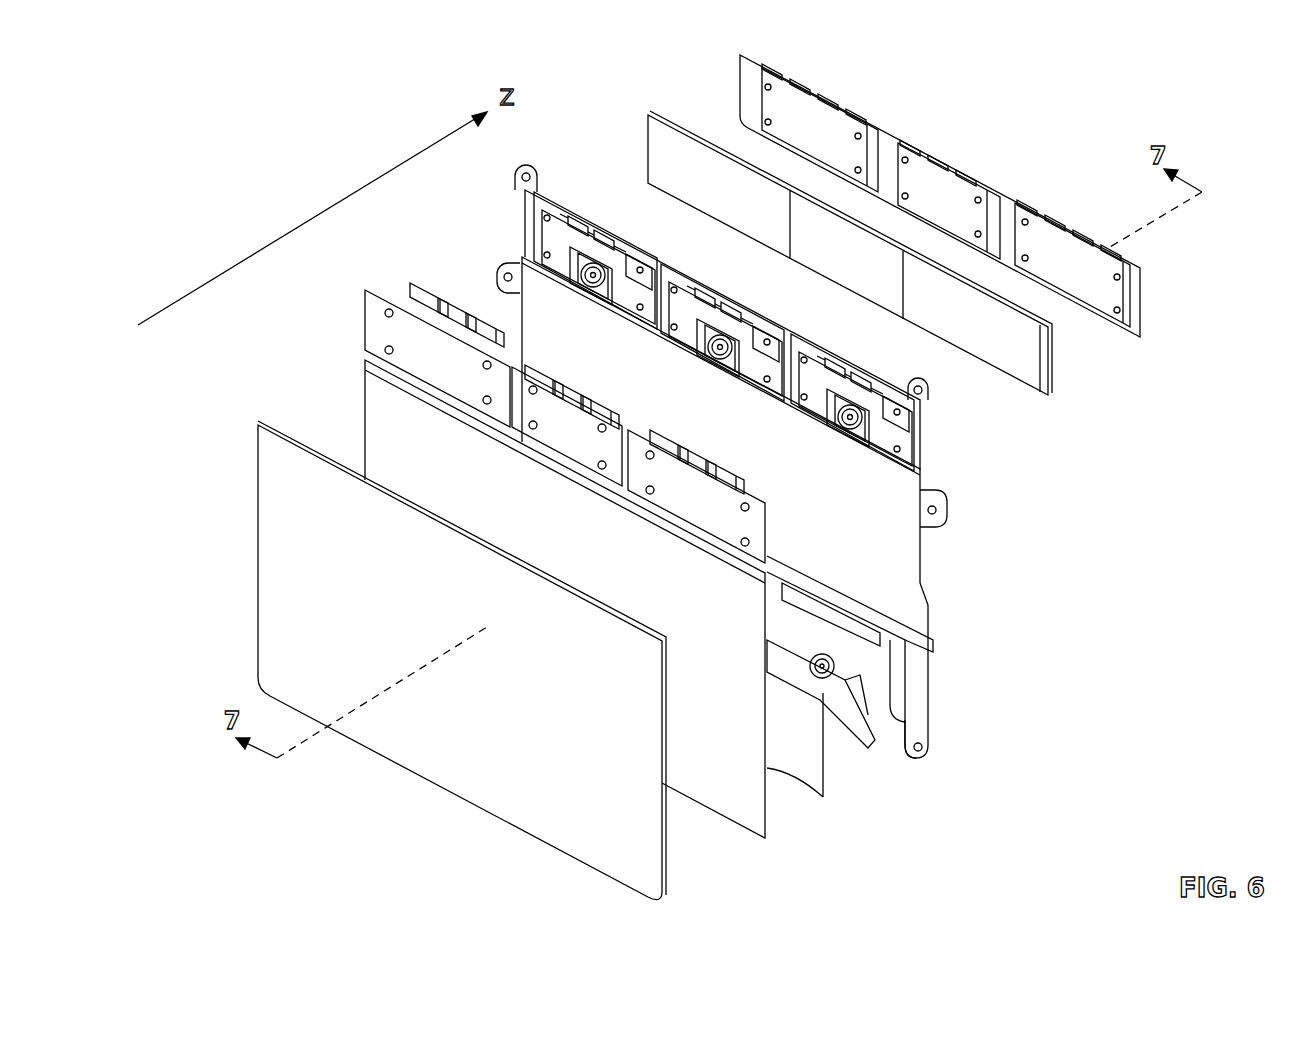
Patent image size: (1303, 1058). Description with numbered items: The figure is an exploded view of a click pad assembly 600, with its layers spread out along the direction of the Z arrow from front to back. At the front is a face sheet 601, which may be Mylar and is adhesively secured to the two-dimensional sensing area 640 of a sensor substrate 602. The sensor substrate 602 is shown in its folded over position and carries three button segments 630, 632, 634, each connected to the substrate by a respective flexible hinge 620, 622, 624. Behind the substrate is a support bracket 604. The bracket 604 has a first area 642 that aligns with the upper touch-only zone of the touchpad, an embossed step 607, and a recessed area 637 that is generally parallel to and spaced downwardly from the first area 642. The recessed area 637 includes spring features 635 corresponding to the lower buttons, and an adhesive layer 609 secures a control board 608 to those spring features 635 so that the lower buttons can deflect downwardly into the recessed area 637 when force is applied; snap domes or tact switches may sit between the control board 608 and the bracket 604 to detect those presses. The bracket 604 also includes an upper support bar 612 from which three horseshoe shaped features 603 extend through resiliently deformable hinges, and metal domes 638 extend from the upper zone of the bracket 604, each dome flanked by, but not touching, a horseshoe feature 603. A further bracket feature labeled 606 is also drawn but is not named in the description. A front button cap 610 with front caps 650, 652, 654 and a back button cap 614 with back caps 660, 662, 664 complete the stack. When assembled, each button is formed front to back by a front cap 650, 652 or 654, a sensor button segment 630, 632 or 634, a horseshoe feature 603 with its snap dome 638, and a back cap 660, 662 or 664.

The click pad assembly 600 is at (1184, 78).
The face sheet 601 is at (270, 598).
The sensor substrate 602 is at (525, 548).
The horseshoe shaped feature 603 is at (890, 432).
The support bracket 604 is at (697, 493).
The mounting ear 606 is at (498, 275).
The embossed step 607 is at (935, 635).
The control board 608 is at (790, 770).
The adhesive layer 609 is at (865, 733).
The front button cap 610 is at (850, 269).
The upper support bar 612 is at (530, 186).
The back button cap 614 is at (980, 196).
The flexible hinge 620 is at (457, 303).
The flexible hinge 622 is at (572, 380).
The flexible hinge 624 is at (697, 445).
The button segment 630 is at (417, 368).
The button segment 632 is at (544, 441).
The button segment 634 is at (676, 510).
The spring feature 635 is at (905, 705).
The recessed area 637 is at (932, 686).
The metal dome 638 is at (590, 262).
The two-dimensional sensing area 640 is at (524, 538).
The first area 642 is at (717, 308).
The front cap 650 is at (697, 196).
The front cap 652 is at (827, 263).
The front cap 654 is at (957, 333).
The back cap 660 is at (791, 136).
The back cap 662 is at (919, 210).
The back cap 664 is at (1049, 278).